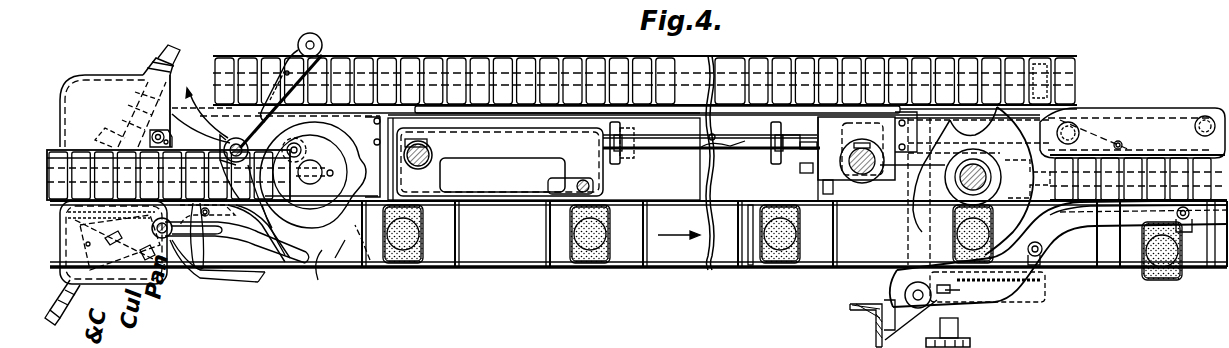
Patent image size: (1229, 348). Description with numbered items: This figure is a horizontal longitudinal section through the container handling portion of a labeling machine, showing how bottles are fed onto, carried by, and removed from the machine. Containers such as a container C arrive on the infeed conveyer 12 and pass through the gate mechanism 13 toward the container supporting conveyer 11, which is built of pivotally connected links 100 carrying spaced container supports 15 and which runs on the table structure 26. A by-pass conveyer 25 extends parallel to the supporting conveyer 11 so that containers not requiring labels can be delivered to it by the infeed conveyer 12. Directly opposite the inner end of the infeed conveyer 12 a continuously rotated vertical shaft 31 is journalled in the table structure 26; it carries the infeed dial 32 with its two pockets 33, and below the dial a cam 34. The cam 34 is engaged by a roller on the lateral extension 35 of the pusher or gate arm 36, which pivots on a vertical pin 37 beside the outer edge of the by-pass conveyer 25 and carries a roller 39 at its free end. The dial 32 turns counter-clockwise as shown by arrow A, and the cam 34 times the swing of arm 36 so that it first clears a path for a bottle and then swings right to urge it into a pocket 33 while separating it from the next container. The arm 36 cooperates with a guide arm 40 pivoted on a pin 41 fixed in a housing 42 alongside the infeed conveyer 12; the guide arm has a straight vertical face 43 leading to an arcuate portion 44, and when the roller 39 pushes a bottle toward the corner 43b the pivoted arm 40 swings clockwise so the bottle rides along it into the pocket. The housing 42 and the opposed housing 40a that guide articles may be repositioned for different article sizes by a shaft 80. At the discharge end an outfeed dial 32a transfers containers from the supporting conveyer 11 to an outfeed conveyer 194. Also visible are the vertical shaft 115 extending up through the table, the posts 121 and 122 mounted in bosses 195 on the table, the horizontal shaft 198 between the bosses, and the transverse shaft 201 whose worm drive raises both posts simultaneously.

The container supporting conveyer 11 is at (503, 250).
The infeed conveyer 12 is at (80, 143).
The gate mechanism 13 is at (248, 240).
The container supports 15 is at (400, 258).
The by-pass conveyer 25 is at (478, 50).
The table structure 26 is at (420, 170).
The vertical shaft 31 is at (318, 168).
The dial 32 is at (335, 258).
The outfeed dial 32a is at (905, 232).
The pockets 33 is at (362, 180).
The cam 34 is at (370, 260).
The lateral extension 35 is at (295, 145).
The pusher or gate arm 36 is at (280, 100).
The vertical pin 37 is at (322, 42).
The roller 39 is at (238, 138).
The guide arm 40 is at (262, 258).
The opposed housing 40a is at (128, 75).
The pin 41 is at (192, 265).
The housing 42 is at (172, 280).
The straight vertical face 43 is at (265, 300).
The corner 43b is at (270, 268).
The arcuate portion 44 is at (318, 280).
The shaft 80 is at (165, 50).
The pivotally connected links 100 is at (752, 258).
The vertical shaft 115 is at (985, 255).
The post 121 is at (468, 185).
The post 122 is at (862, 183).
The outfeed conveyer 194 is at (1132, 160).
The bosses 195 is at (832, 162).
The shaft 198 is at (678, 145).
The transverse shaft 201 is at (827, 196).
The arrow A is at (366, 168).
The container C is at (420, 250).